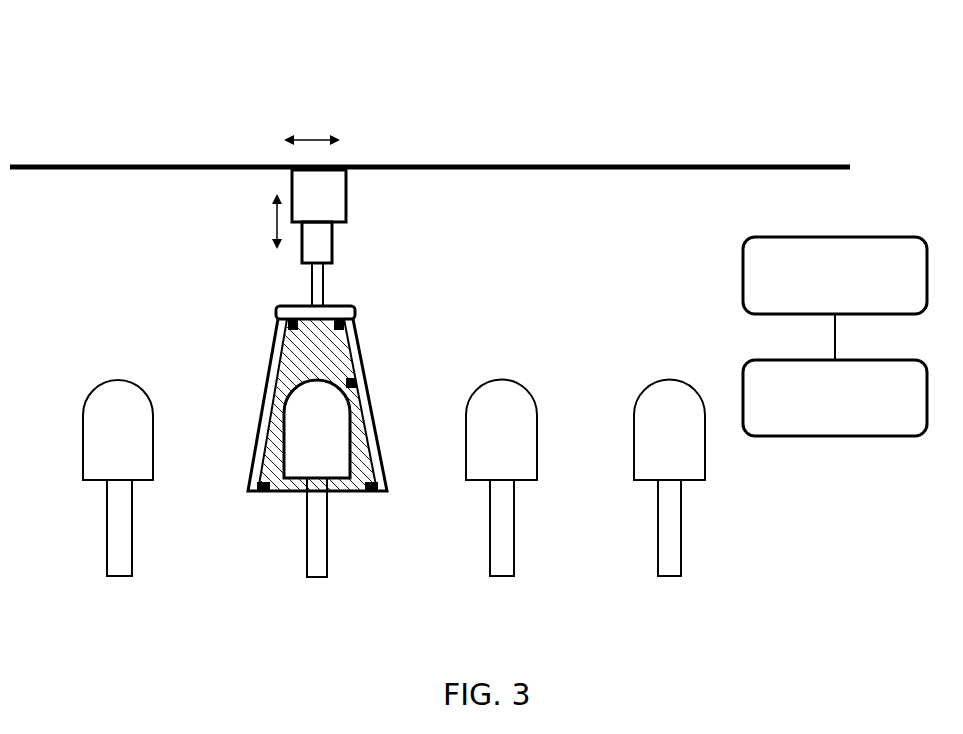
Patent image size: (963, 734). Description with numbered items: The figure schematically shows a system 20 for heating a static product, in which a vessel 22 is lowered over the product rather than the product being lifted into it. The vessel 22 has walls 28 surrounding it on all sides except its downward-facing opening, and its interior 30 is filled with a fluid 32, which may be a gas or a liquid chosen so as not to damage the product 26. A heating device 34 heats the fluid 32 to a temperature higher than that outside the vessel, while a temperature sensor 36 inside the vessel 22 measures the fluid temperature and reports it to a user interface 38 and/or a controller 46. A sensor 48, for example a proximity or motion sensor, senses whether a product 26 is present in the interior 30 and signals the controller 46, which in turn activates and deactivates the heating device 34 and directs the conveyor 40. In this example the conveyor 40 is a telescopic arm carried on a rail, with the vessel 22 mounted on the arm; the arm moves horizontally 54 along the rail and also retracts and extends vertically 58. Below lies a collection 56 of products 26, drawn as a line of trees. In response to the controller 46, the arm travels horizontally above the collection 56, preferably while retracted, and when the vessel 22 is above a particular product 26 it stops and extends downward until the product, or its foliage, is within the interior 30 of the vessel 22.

The system 20 is at (120, 52).
The vessel 22 is at (387, 430).
The product 26 is at (330, 458).
The walls 28 is at (273, 384).
The interior 30 is at (331, 371).
The fluid 32 is at (355, 320).
The heating device 34 is at (262, 496).
The temperature sensor 36 is at (282, 321).
The user interface 38 is at (823, 304).
The conveyor 40 is at (362, 188).
The controller 46 is at (823, 426).
The sensor 48 is at (356, 384).
The horizontal motion 54 is at (311, 136).
The collection of products 56 is at (730, 594).
The vertical retraction and extension 58 is at (272, 218).